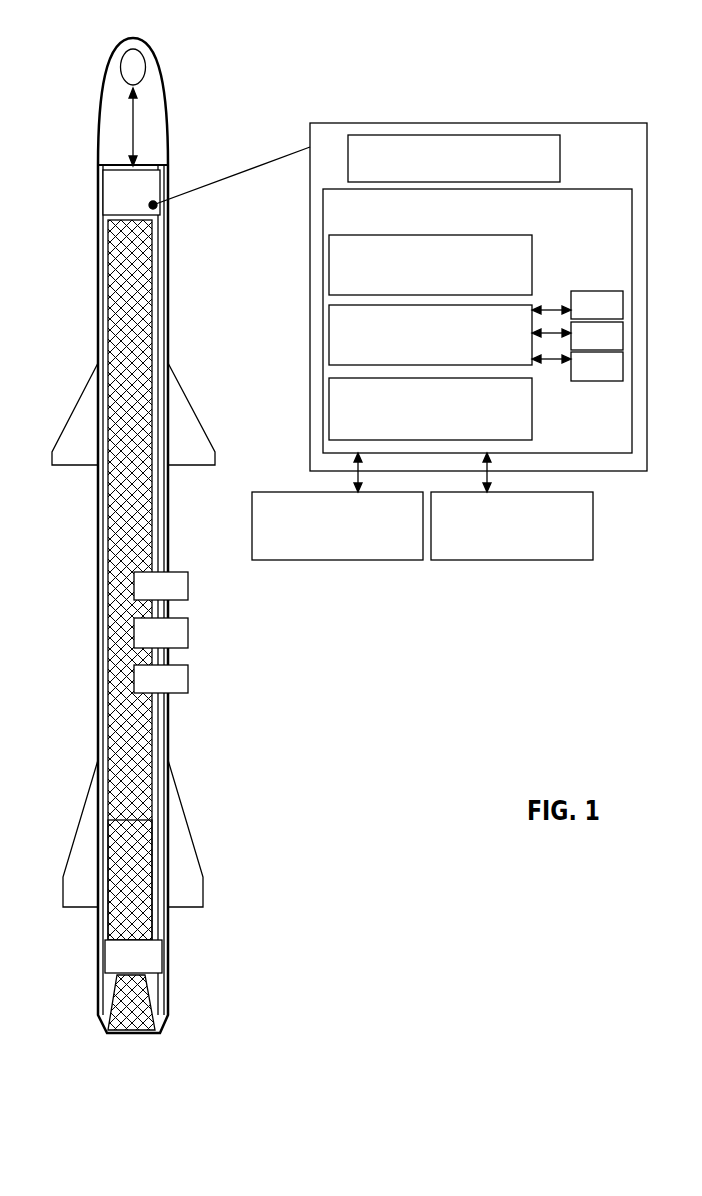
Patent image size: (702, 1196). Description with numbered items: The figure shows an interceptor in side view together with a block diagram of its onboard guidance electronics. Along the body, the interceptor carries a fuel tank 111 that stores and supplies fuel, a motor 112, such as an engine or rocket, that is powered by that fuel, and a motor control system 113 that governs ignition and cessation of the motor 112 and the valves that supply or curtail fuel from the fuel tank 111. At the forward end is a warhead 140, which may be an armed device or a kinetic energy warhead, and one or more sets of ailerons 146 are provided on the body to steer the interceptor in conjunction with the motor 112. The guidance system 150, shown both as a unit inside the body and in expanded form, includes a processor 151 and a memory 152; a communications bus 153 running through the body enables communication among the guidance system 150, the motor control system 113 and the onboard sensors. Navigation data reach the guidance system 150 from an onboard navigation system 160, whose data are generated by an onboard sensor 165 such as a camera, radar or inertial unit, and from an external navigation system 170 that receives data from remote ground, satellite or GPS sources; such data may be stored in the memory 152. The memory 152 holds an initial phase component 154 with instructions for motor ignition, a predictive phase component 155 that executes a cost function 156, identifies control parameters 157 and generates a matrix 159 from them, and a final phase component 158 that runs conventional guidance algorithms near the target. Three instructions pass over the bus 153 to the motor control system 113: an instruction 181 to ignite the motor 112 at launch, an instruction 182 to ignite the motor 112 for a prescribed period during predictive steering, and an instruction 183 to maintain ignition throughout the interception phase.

The fuel tank 111 is at (177, 884).
The motor 112 is at (177, 1002).
The motor control system 113 is at (175, 960).
The warhead 140 is at (189, 535).
The ailerons 146 is at (152, 635).
The guidance system 150 is at (560, 123).
The processor 151 is at (454, 158).
The memory 152 is at (477, 321).
The communications bus 153 is at (170, 571).
The initial phase component 154 is at (430, 265).
The predictive phase component 155 is at (450, 335).
The cost function 156 is at (597, 305).
The control parameters 157 is at (597, 336).
The final phase component 158 is at (430, 409).
The matrix 159 is at (597, 366).
The onboard navigation system 160 is at (337, 506).
The onboard sensor 165 is at (190, 86).
The external navigation system 170 is at (512, 506).
The instruction 181 is at (161, 679).
The instruction 182 is at (161, 633).
The instruction 183 is at (161, 586).